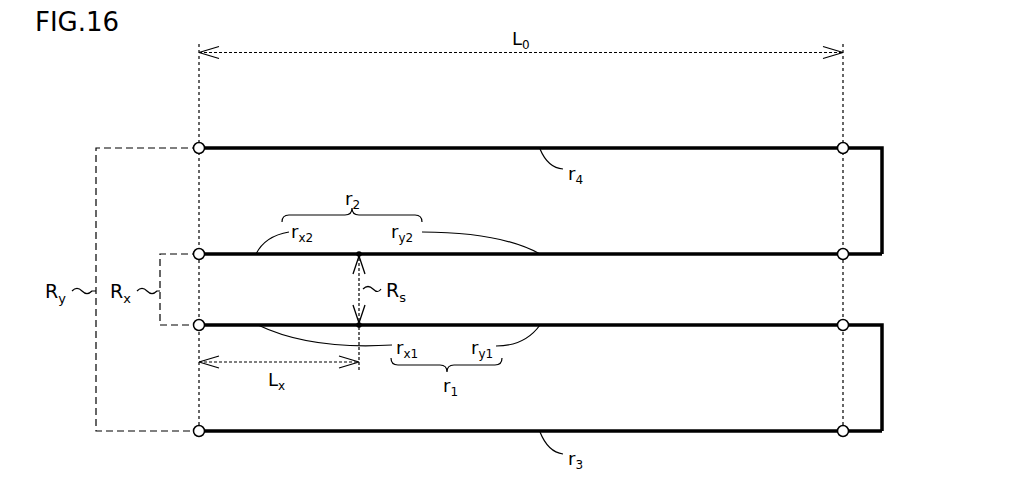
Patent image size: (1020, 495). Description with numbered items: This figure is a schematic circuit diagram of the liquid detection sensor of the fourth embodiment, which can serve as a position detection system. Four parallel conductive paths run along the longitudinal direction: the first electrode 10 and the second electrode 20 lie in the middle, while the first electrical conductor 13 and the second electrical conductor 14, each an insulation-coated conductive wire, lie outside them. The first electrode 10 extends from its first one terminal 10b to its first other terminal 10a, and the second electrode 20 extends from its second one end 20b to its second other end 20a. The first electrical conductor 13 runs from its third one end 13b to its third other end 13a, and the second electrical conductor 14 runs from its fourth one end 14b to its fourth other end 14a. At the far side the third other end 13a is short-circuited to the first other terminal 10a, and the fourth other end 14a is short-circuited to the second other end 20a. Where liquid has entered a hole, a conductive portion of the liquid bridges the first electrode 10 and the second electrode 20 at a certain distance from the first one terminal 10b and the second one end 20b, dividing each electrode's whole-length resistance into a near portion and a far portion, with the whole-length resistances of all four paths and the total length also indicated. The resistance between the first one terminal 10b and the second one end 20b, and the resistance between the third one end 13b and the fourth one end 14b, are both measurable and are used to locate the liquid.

The first electrode 10 is at (748, 327).
The first other terminal 10a is at (847, 321).
The first one terminal 10b is at (195, 329).
The first electrical conductor 13 is at (748, 433).
The third other end 13a is at (847, 435).
The third one end 13b is at (195, 435).
The second electrical conductor 14 is at (748, 150).
The fourth other end 14a is at (847, 144).
The fourth one end 14b is at (195, 144).
The second electrode 20 is at (748, 256).
The second other end 20a is at (847, 258).
The second one end 20b is at (195, 250).